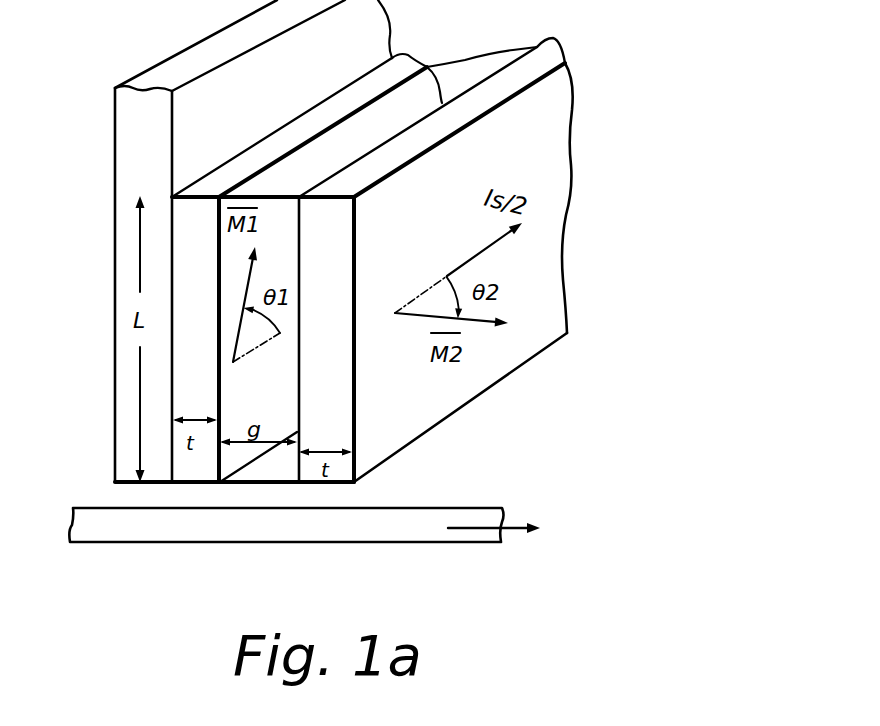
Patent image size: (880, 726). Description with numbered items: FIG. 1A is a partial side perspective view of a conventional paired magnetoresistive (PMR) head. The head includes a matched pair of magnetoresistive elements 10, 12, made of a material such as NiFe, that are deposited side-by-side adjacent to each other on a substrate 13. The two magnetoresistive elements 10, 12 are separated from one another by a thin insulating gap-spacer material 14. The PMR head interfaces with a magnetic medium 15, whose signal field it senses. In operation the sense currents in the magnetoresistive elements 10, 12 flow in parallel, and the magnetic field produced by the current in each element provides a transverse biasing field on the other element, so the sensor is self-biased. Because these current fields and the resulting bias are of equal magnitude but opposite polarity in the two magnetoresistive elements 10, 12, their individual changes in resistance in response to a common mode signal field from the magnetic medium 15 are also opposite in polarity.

The magnetoresistive element 10 is at (243, 157).
The magnetoresistive element 12 is at (528, 58).
The substrate 13 is at (120, 135).
The insulating gap-spacer material 14 is at (400, 107).
The magnetic medium 15 is at (200, 530).